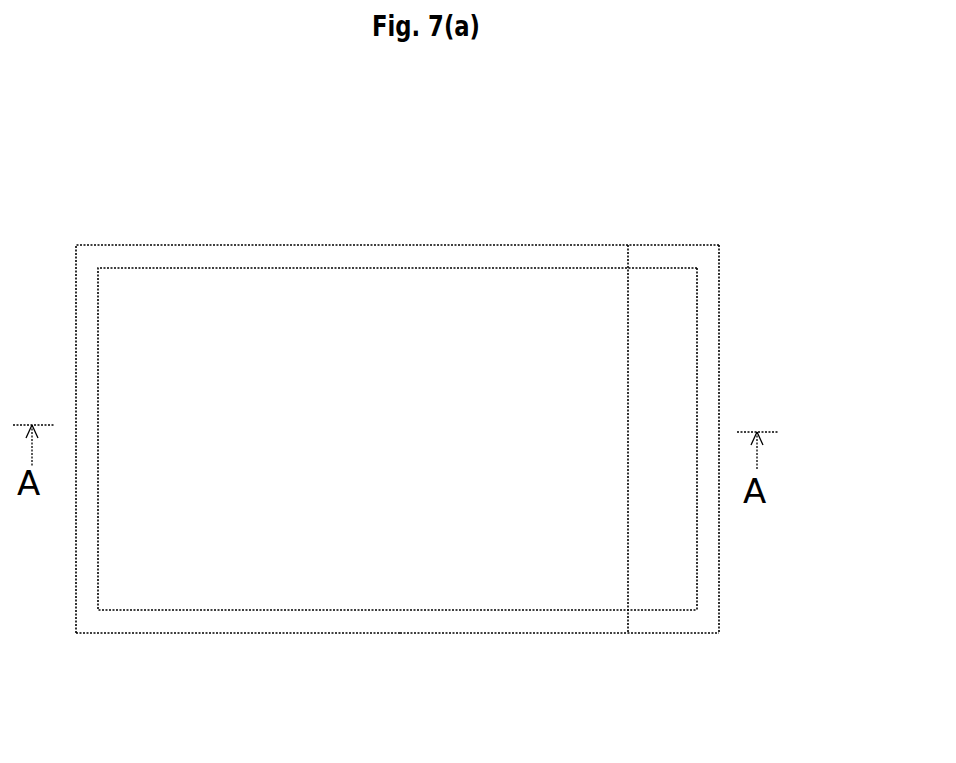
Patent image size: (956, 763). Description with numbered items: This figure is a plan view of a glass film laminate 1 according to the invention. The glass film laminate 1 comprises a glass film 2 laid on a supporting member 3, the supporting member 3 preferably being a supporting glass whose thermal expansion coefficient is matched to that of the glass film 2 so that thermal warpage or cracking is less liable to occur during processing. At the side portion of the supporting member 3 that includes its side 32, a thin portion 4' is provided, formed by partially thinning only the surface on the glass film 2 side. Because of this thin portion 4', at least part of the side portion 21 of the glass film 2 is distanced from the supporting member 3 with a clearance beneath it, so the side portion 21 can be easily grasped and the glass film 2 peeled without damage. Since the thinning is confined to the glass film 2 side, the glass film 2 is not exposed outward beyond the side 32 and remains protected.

The glass film laminate 1 is at (715, 193).
The glass film 2 is at (197, 303).
The supporting member 3 is at (360, 623).
The side of the supporting member 32 is at (718, 560).
The side portion of the glass film 21 is at (698, 398).
The thin portion 4' is at (729, 432).